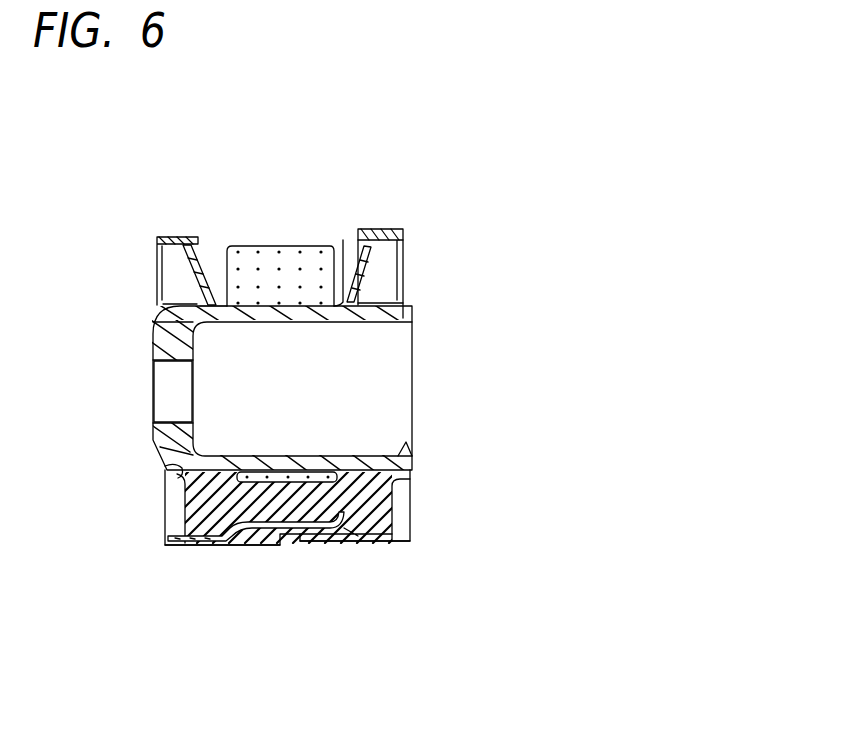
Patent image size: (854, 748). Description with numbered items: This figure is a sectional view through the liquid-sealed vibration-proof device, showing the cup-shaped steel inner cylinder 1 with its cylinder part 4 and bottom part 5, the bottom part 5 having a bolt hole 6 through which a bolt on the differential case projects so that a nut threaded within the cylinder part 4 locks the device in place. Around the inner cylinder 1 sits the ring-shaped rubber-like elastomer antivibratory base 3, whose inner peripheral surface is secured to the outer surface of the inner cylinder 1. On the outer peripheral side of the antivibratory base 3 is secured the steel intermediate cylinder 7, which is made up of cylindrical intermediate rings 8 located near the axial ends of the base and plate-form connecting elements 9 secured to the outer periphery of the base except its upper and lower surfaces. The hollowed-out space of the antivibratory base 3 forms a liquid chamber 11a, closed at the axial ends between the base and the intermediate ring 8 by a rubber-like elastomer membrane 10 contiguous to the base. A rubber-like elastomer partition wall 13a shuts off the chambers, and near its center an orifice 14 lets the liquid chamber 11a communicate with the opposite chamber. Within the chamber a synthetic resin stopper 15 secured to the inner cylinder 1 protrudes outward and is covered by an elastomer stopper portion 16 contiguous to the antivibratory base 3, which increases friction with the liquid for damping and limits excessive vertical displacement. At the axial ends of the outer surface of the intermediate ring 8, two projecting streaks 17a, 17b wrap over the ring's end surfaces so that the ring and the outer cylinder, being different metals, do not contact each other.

The inner cylinder 1 is at (425, 354).
The antivibratory base 3 is at (398, 492).
The cylinder part 4 is at (407, 448).
The bottom part 5 is at (165, 440).
The bolt hole 6 is at (173, 390).
The intermediate cylinder 7 is at (387, 560).
The intermediate ring 8 is at (375, 233).
The connecting element 9 is at (245, 545).
The rubber-like elastomer membrane 10 is at (372, 260).
The liquid chamber 11a is at (210, 250).
The partition wall 13a is at (328, 545).
The orifice 14 is at (288, 545).
The stopper 15 is at (278, 270).
The stopper portion 16 is at (343, 240).
The projecting streak 17a is at (161, 238).
The projecting streak 17b is at (197, 236).